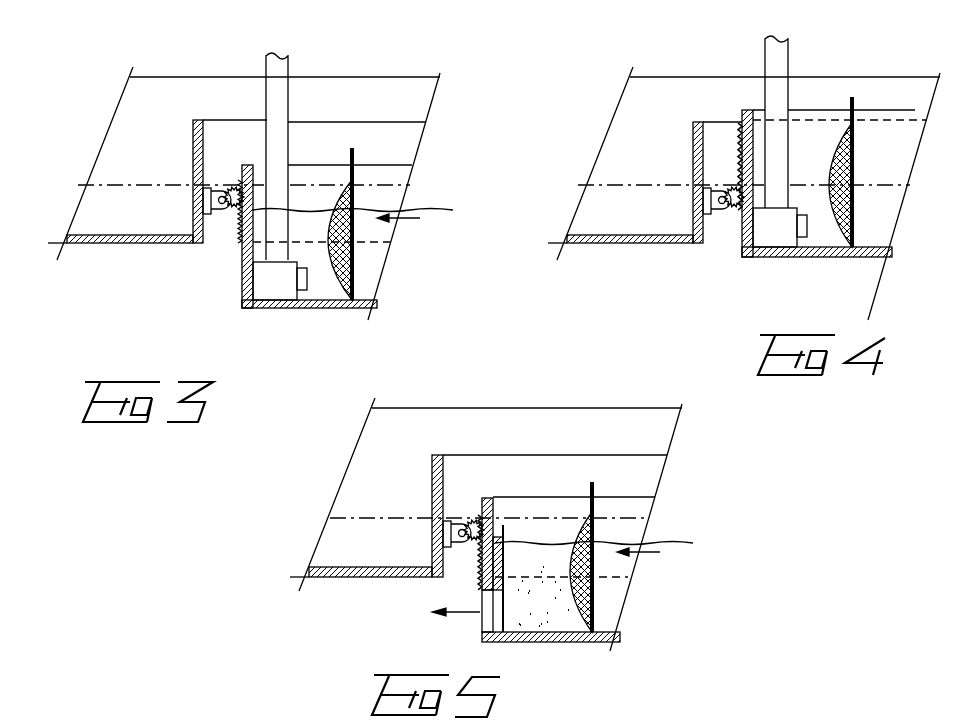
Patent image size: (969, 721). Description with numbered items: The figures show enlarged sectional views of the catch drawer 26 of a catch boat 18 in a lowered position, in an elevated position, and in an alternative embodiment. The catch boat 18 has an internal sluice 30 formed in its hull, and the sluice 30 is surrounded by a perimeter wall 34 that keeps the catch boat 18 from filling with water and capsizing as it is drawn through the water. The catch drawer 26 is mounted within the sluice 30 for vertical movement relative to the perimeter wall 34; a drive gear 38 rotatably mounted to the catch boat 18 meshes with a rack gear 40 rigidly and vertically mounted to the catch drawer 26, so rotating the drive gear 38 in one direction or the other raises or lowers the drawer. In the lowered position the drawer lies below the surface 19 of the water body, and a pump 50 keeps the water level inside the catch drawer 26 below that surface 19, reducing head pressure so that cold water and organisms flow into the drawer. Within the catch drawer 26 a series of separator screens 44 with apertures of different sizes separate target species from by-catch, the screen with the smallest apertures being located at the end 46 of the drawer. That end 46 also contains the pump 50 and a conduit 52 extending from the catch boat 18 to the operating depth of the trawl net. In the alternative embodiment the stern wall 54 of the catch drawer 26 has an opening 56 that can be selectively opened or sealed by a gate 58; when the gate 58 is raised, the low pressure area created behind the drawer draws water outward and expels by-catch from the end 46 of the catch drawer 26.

In FIG. 3, the catch boat 18 is at (403, 93).
In FIG. 4, the catch boat 18 is at (702, 85).
In FIG. 5, the catch boat 18 is at (553, 433).
In FIG. 3, the surface of the water body 19 is at (150, 185).
In FIG. 5, the surface of the water body 19 is at (385, 518).
In FIG. 3, the catch drawer 26 is at (372, 273).
In FIG. 4, the catch drawer 26 is at (878, 233).
In FIG. 5, the catch drawer 26 is at (603, 605).
In FIG. 3, the internal sluice 30 is at (223, 230).
In FIG. 4, the internal sluice 30 is at (728, 227).
In FIG. 5, the internal sluice 30 is at (460, 570).
In FIG. 3, the perimeter wall 34 is at (193, 120).
In FIG. 3, the drive gear 38 is at (203, 213).
In FIG. 4, the drive gear 38 is at (725, 185).
In FIG. 5, the drive gear 38 is at (463, 533).
In FIG. 3, the rack gear 40 is at (240, 243).
In FIG. 4, the rack gear 40 is at (740, 138).
In FIG. 5, the rack gear 40 is at (487, 544).
In FIG. 3, the separator screen 44 is at (345, 190).
In FIG. 4, the separator screen 44 is at (833, 143).
In FIG. 5, the separator screen 44 is at (600, 520).
In FIG. 3, the end of catch drawer 46 is at (298, 310).
In FIG. 4, the end of catch drawer 46 is at (817, 257).
In FIG. 5, the end of catch drawer 46 is at (532, 643).
In FIG. 3, the pump 50 is at (262, 312).
In FIG. 4, the pump 50 is at (760, 253).
In FIG. 3, the conduit 52 is at (281, 68).
In FIG. 4, the conduit 52 is at (776, 122).
In FIG. 3, the stern wall 54 is at (247, 165).
In FIG. 5, the stern wall 54 is at (487, 547).
In FIG. 5, the opening 56 is at (485, 615).
In FIG. 5, the gate 58 is at (505, 557).